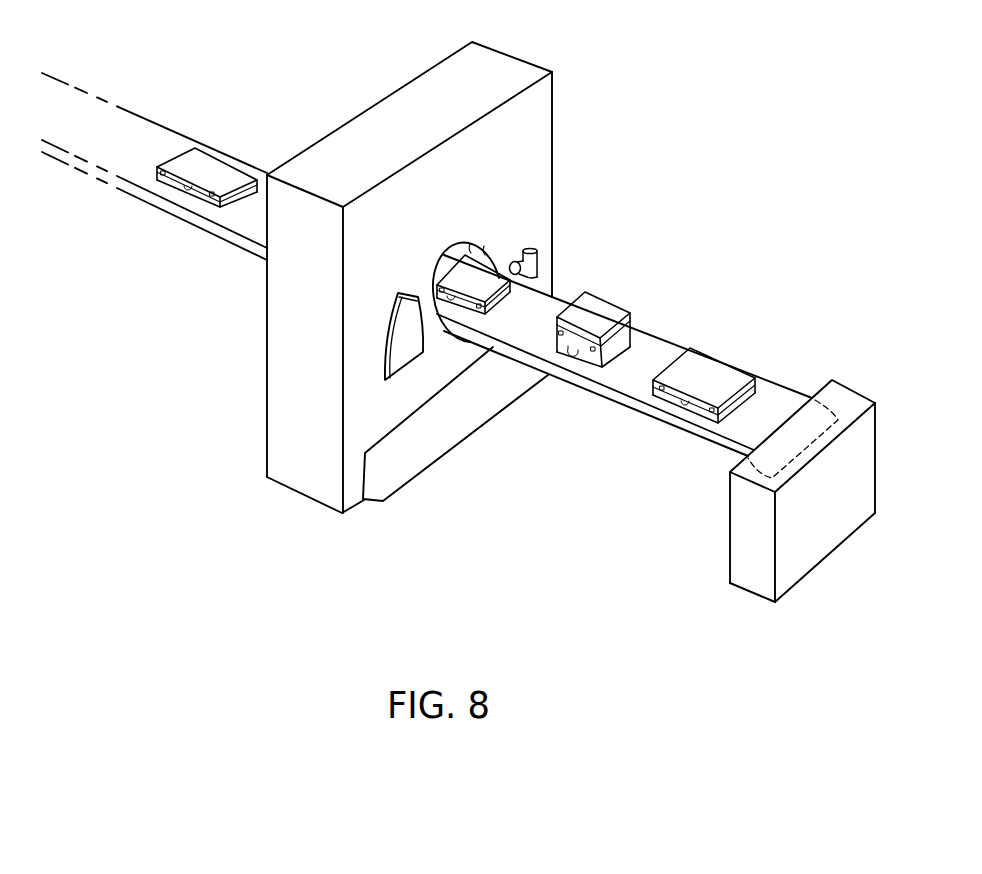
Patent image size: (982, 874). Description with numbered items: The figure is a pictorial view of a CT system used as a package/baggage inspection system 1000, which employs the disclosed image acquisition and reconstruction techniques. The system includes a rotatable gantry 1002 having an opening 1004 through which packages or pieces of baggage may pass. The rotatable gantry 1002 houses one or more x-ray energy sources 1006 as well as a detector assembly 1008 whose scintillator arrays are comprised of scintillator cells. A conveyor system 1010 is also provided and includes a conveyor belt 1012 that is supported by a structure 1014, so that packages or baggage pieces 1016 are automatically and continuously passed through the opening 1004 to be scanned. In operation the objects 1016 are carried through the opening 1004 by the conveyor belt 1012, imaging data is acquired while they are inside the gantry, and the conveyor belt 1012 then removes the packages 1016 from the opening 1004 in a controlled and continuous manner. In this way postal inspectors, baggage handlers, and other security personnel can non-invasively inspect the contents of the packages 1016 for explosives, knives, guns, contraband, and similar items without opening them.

The package/baggage inspection system 1000 is at (750, 188).
The rotatable gantry 1002 is at (541, 212).
The opening 1004 is at (488, 254).
The x-ray energy source 1006 is at (540, 265).
The detector assembly 1008 is at (402, 355).
The conveyor system 1010 is at (78, 185).
The conveyor belt 1012 is at (240, 217).
The structure 1014 is at (807, 545).
The packages or baggage pieces 1016 is at (213, 170).